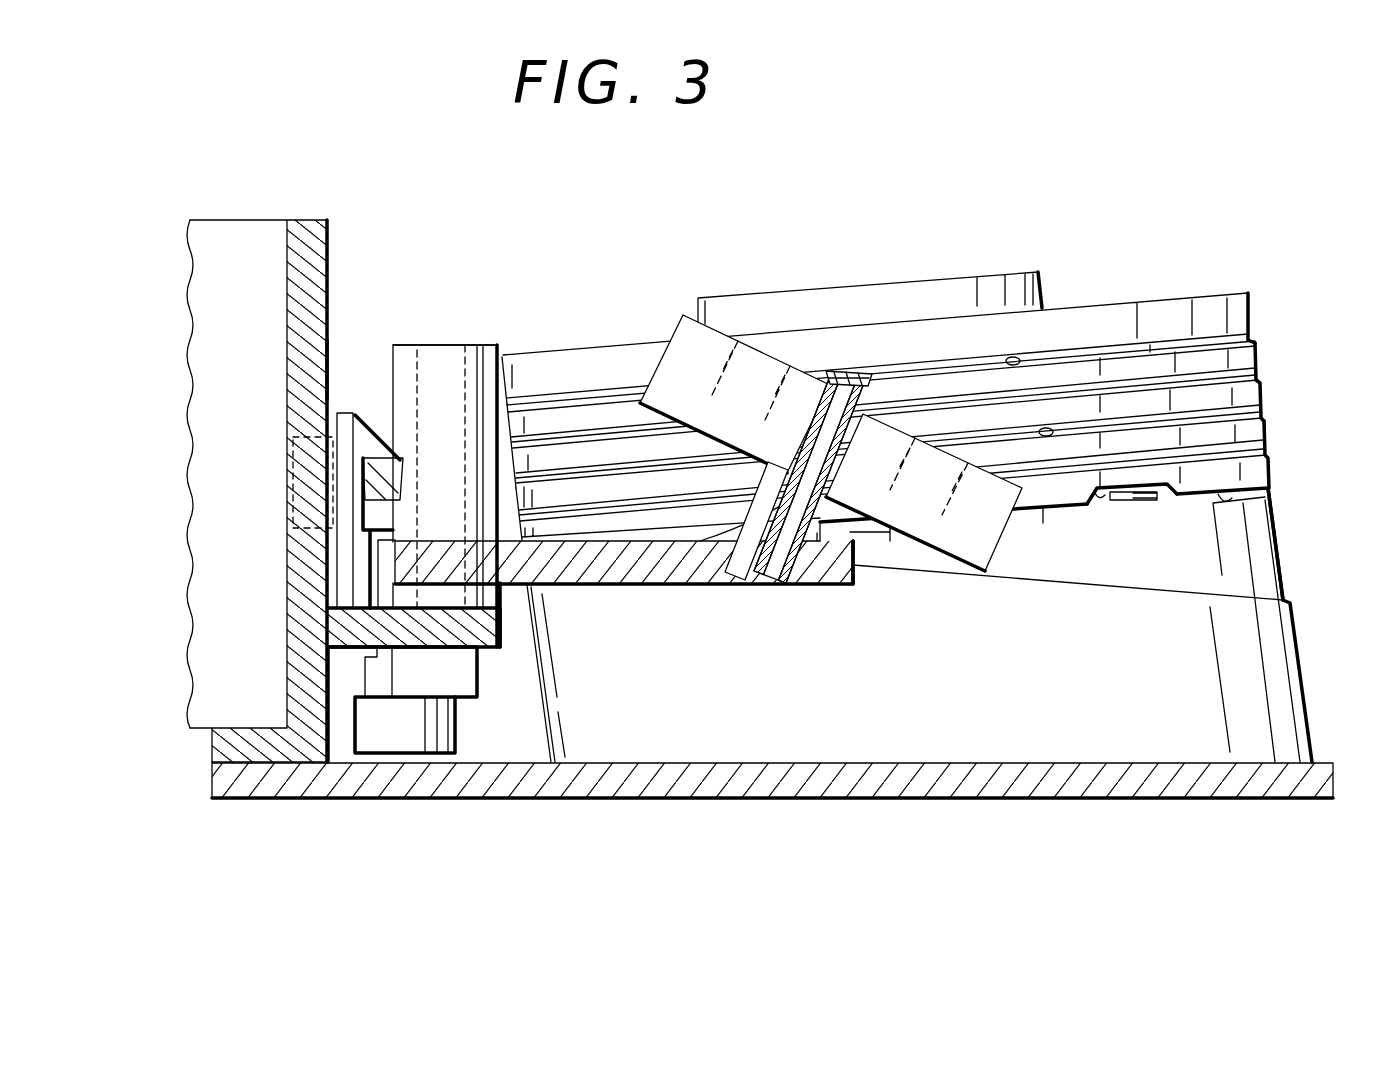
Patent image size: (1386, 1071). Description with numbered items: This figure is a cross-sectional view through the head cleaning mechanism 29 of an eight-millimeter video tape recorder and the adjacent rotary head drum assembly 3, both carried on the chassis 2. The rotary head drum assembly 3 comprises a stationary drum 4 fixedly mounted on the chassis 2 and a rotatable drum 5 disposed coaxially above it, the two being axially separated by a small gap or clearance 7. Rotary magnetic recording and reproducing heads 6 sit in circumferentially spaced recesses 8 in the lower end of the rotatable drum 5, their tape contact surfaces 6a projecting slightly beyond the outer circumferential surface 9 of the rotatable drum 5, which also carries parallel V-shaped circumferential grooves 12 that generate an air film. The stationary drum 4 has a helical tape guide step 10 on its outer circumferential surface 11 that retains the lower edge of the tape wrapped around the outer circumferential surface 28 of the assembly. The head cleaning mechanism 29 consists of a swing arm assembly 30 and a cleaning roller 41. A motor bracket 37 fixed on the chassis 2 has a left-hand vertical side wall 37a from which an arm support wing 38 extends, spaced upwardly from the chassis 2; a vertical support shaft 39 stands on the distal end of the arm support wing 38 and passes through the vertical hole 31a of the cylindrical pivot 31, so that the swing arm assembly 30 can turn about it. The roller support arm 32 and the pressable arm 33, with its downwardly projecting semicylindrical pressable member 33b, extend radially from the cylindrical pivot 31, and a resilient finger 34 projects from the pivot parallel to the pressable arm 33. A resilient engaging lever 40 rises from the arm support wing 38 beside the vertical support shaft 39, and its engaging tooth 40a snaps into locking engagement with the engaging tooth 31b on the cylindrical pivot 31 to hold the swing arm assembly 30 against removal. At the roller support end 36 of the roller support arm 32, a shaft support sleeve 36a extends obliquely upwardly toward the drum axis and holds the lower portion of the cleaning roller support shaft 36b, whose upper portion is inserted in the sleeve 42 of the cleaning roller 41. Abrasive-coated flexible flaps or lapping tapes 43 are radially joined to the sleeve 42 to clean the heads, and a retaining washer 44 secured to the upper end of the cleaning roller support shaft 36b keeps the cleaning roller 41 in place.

The chassis 2 is at (1157, 790).
The rotary head drum assembly 3 is at (1286, 536).
The stationary drum 4 is at (1268, 570).
The rotatable drum 5 is at (1252, 308).
The rotary magnetic recording and reproducing heads 6 is at (1130, 497).
The tape contact surfaces 6a is at (1148, 497).
The gap or clearance 7 is at (1267, 460).
The recesses 8 is at (1117, 480).
The outer circumferential surface of the rotatable drum 9 is at (1147, 320).
The helical tape guide step 10 is at (1147, 580).
The outer circumferential surface of the stationary drum 11 is at (1273, 638).
The circumferential grooves 12 is at (1027, 357).
The outer circumferential surface of the rotary head drum assembly 28 is at (1263, 388).
The head cleaning mechanism 29 is at (459, 306).
The swing arm assembly 30 is at (570, 590).
The cylindrical pivot 31 is at (474, 355).
The vertical hole 31a is at (423, 362).
The engaging tooth 31b is at (398, 455).
The roller support arm 32 is at (710, 565).
The pressable arm 33 is at (470, 670).
The pressable member 33b is at (453, 727).
The resilient finger 34 is at (300, 432).
The roller support end 36 is at (808, 567).
The shaft support sleeve 36a is at (692, 545).
The cleaning roller support shaft 36b is at (857, 532).
The motor bracket 37 is at (232, 228).
The left-hand vertical side wall 37a is at (293, 363).
The arm support wing 38 is at (350, 637).
The vertical support shaft 39 is at (467, 403).
The resilient engaging lever 40 is at (345, 490).
The engaging tooth 40a is at (400, 455).
The cleaning roller 41 is at (778, 385).
The sleeve 42 is at (822, 385).
The flexible flaps or lapping tapes 43 is at (683, 330).
The retaining washer 44 is at (888, 385).